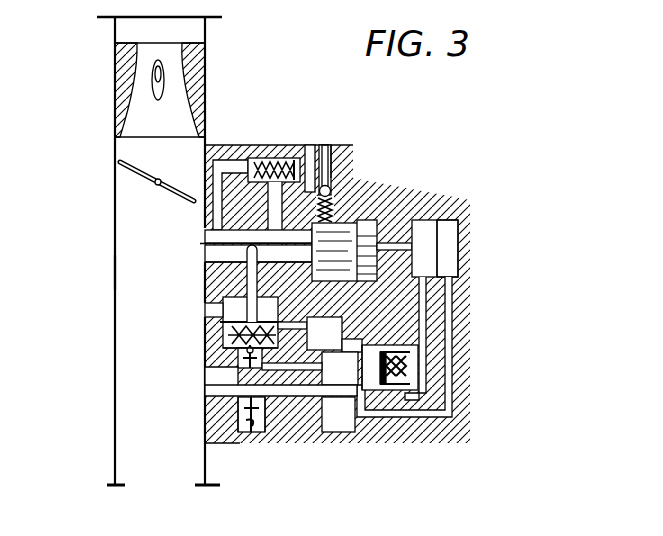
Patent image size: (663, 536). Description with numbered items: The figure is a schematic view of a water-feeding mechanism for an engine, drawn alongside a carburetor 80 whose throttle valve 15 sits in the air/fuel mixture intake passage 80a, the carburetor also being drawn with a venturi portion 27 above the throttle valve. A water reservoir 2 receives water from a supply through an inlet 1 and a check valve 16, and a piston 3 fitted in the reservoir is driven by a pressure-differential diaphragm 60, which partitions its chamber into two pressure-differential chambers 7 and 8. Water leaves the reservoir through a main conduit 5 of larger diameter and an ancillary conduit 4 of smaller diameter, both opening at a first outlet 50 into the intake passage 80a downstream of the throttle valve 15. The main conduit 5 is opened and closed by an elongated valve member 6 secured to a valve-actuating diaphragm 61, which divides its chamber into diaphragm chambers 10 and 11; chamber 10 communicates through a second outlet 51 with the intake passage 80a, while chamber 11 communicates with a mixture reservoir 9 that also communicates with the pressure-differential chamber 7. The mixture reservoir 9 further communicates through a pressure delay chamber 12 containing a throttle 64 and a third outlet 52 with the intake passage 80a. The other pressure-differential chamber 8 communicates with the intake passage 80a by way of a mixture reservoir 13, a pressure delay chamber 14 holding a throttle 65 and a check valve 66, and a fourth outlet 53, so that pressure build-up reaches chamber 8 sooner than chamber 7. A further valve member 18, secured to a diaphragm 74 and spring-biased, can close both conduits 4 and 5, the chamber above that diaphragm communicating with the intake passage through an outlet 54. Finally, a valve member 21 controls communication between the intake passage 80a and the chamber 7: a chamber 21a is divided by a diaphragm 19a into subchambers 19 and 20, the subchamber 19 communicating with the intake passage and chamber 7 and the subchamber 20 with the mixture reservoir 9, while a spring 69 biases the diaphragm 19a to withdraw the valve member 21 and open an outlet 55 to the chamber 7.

The inlet 1 is at (331, 165).
The water reservoir 2 is at (331, 194).
The piston 3 is at (372, 221).
The ancillary conduit 4 is at (207, 236).
The main conduit 5 is at (210, 268).
The valve member 6 is at (258, 290).
The pressure-differential chamber 7 is at (420, 221).
The pressure-differential chamber 8 is at (445, 221).
The mixture reservoir 9 is at (333, 344).
The diaphragm chamber 10 is at (240, 308).
The diaphragm chamber 11 is at (240, 336).
The pressure delay chamber 12 is at (236, 382).
The mixture reservoir 13 is at (336, 432).
The pressure delay chamber 14 is at (256, 432).
The throttle valve 15 is at (120, 162).
The check valve 16 is at (329, 152).
The valve member 18 is at (278, 206).
The subchamber 19 is at (340, 368).
The diaphragm 19a is at (372, 380).
The subchamber 20 is at (388, 378).
The valve member 21 is at (400, 358).
The chamber 21a is at (405, 373).
The venturi 27 is at (195, 77).
The first outlet 50 is at (207, 255).
The second outlet 51 is at (226, 314).
The third outlet 52 is at (245, 365).
The fourth outlet 53 is at (207, 432).
The outlet 54 is at (208, 228).
The outlet 55 is at (215, 392).
The pressure-differential diaphragm 60 is at (437, 240).
The valve-actuating diaphragm 61 is at (206, 312).
The throttle 64 is at (235, 357).
The throttle 65 is at (270, 425).
The check valve 66 is at (243, 432).
The spring 69 is at (400, 382).
The diaphragm 74 is at (265, 158).
The carburetor 80 is at (110, 210).
The air/fuel mixture intake passage 80a is at (128, 265).